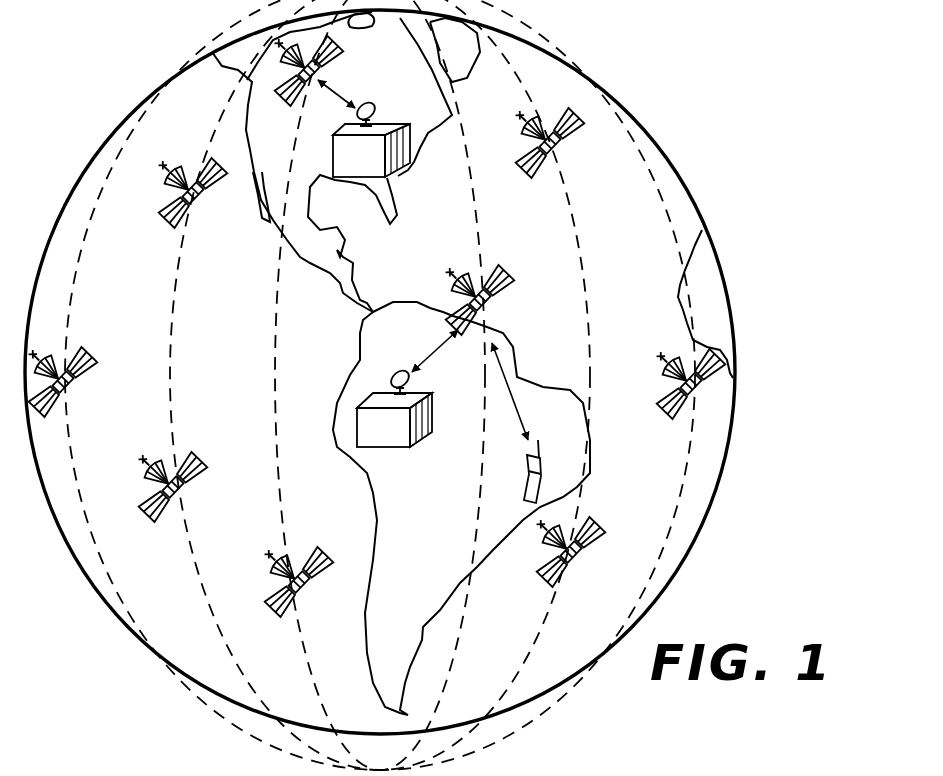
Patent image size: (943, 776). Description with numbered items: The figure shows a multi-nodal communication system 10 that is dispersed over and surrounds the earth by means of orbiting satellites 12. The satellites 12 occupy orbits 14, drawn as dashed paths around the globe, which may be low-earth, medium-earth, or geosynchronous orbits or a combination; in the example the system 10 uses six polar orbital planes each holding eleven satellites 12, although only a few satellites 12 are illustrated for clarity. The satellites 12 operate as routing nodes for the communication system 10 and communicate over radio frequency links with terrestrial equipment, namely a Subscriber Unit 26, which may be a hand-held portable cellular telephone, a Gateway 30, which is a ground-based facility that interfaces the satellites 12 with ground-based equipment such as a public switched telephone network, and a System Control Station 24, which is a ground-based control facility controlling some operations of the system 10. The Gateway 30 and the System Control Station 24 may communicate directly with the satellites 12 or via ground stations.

The multi-nodal communication system 10 is at (806, 588).
The satellite 12 is at (334, 59).
The orbit 14 is at (640, 136).
The System Control Station 24 is at (403, 123).
The Subscriber Unit 26 is at (543, 462).
The Gateway 30 is at (397, 449).